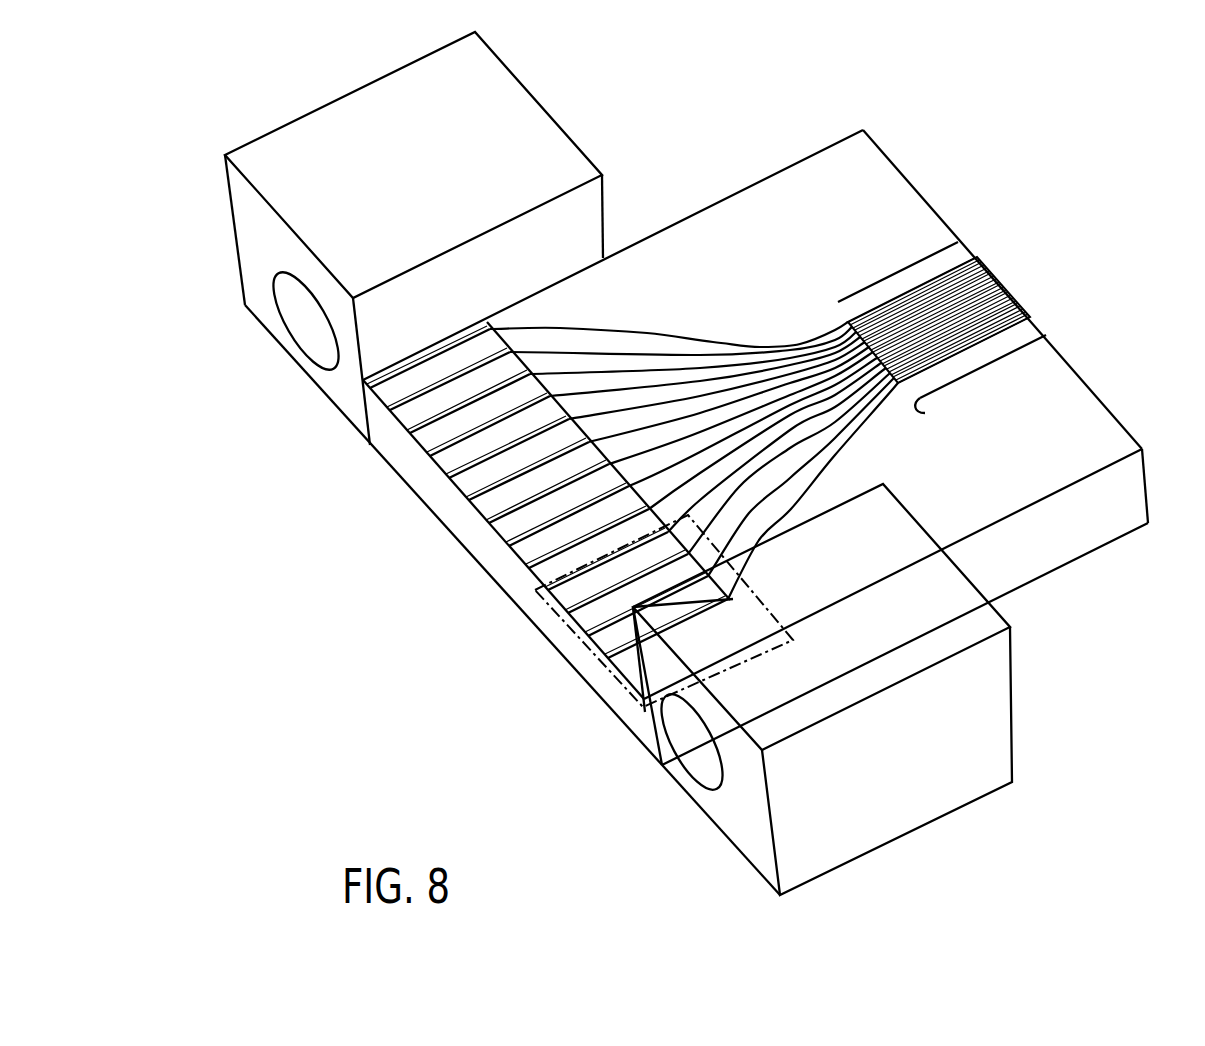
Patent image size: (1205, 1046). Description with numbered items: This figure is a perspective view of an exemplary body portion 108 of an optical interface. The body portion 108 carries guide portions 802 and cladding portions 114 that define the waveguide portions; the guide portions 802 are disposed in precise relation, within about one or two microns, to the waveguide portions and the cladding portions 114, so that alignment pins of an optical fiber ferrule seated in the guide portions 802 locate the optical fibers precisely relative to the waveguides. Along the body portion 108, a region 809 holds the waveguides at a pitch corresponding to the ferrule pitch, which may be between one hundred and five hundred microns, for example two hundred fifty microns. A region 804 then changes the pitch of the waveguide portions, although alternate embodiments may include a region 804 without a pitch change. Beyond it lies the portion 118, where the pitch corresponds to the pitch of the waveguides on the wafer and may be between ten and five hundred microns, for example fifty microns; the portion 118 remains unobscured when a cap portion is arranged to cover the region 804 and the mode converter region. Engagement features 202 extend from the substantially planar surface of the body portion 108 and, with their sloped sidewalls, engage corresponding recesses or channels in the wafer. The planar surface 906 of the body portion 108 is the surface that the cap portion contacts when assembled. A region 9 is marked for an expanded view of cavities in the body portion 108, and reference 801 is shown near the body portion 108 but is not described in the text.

The region 9 is at (787, 643).
The body portion 108 is at (893, 178).
The cladding portions 114 is at (512, 345).
The portion 118 is at (1055, 354).
The engagement features 202 is at (840, 302).
The substrate 801 is at (1097, 402).
The guide portions 802 is at (305, 322).
The region 804 is at (824, 333).
The region 809 is at (490, 327).
The planar surface 906 is at (817, 217).